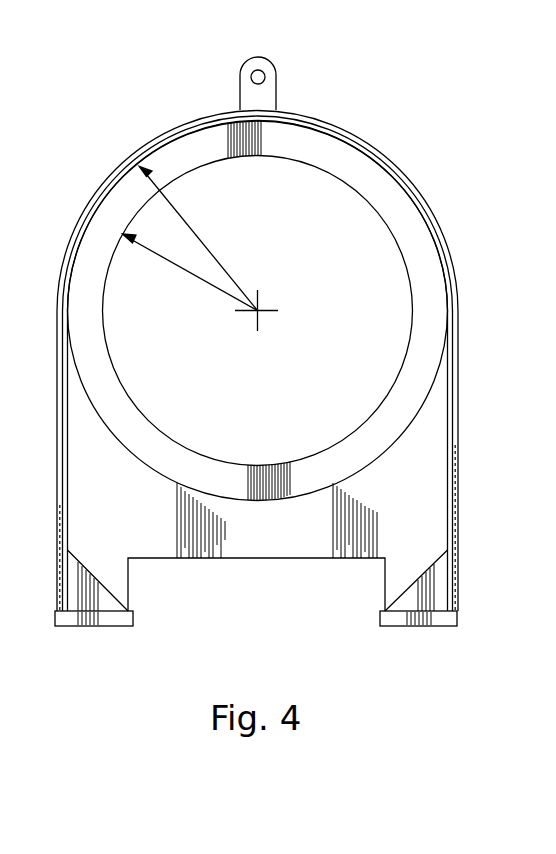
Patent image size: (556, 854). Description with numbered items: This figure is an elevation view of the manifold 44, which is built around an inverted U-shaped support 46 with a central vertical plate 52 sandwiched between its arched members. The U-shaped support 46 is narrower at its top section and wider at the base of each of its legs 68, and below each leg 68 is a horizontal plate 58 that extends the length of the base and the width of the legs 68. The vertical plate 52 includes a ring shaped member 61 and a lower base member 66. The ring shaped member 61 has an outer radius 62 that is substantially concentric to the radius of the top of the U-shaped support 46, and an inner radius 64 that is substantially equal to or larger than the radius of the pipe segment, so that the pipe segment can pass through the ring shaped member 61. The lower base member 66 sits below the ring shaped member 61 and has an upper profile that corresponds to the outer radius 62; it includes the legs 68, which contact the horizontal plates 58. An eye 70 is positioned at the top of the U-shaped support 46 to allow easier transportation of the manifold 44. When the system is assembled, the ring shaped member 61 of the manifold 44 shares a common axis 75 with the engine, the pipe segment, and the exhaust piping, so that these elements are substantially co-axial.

The manifold 44 is at (395, 118).
The U-shaped support 46 is at (183, 127).
The vertical plate 52 is at (432, 280).
The horizontal plate 58 is at (123, 618).
The ring shaped member 61 is at (383, 190).
The outer radius 62 is at (193, 228).
The inner radius 64 is at (168, 260).
The lower base member 66 is at (425, 473).
The leg 68 is at (102, 602).
The eye 70 is at (266, 76).
The common axis 75 is at (262, 305).